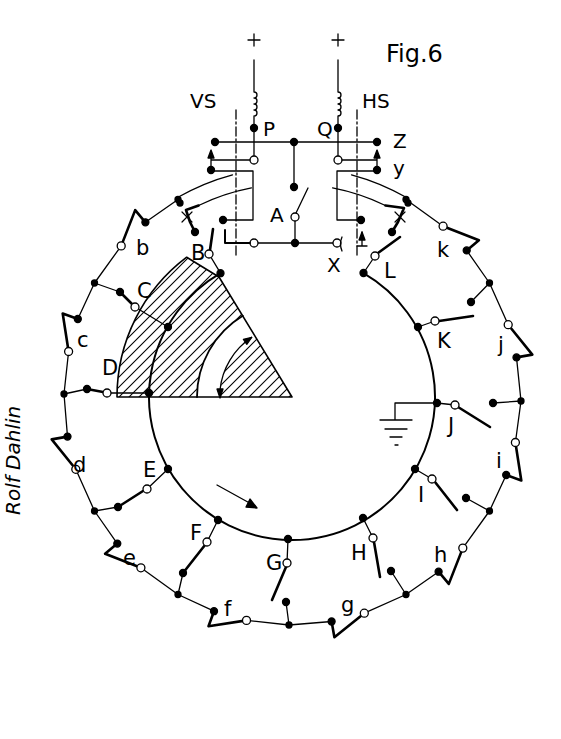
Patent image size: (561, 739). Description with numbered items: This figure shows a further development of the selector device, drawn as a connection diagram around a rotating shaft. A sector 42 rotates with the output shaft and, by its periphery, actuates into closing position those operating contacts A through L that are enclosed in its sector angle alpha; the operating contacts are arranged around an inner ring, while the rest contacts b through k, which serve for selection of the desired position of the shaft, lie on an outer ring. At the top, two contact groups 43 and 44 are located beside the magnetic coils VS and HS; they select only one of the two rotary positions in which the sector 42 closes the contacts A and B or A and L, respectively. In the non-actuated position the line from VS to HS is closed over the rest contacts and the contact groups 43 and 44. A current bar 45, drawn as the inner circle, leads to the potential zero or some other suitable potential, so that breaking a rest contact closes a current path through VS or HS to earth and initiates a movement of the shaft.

The sector 42 is at (190, 389).
The contact group 43 is at (222, 177).
The contact group 44 is at (372, 131).
The current bar 45 is at (328, 533).